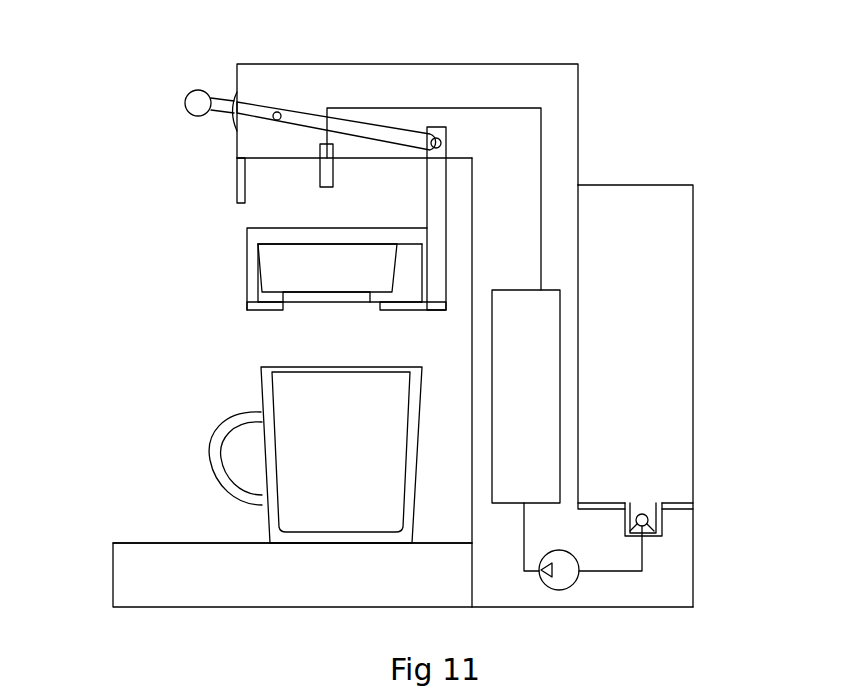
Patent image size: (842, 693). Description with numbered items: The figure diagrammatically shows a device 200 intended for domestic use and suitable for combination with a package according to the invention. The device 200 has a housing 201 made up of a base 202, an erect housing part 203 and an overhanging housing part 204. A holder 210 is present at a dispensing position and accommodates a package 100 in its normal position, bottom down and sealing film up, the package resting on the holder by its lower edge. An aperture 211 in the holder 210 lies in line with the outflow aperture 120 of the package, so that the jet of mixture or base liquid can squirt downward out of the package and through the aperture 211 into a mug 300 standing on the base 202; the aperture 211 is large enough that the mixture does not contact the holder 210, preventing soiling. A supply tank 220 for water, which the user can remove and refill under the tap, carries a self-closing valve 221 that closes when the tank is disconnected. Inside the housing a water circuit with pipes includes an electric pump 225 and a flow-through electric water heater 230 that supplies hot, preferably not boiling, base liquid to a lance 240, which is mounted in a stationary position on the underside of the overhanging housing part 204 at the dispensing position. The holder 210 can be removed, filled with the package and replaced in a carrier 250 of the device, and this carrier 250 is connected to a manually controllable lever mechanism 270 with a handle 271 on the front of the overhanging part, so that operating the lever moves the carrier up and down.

The package 100 is at (352, 279).
The outflow aperture 120 is at (338, 303).
The device 200 is at (352, 618).
The housing 201 is at (520, 63).
The base 202 is at (340, 590).
The erect housing part 203 is at (530, 257).
The overhanging housing part 204 is at (377, 102).
The holder 210 is at (247, 272).
The aperture 211 is at (297, 302).
The supply tank 220 is at (651, 326).
The self-closing valve 221 is at (654, 490).
The electric pump 225 is at (559, 590).
The flow-through electric water heater 230 is at (553, 405).
The lance 240 is at (333, 179).
The carrier 250 is at (427, 310).
The lever mechanism 270 is at (302, 120).
The handle 271 is at (198, 100).
The mug 300 is at (205, 432).